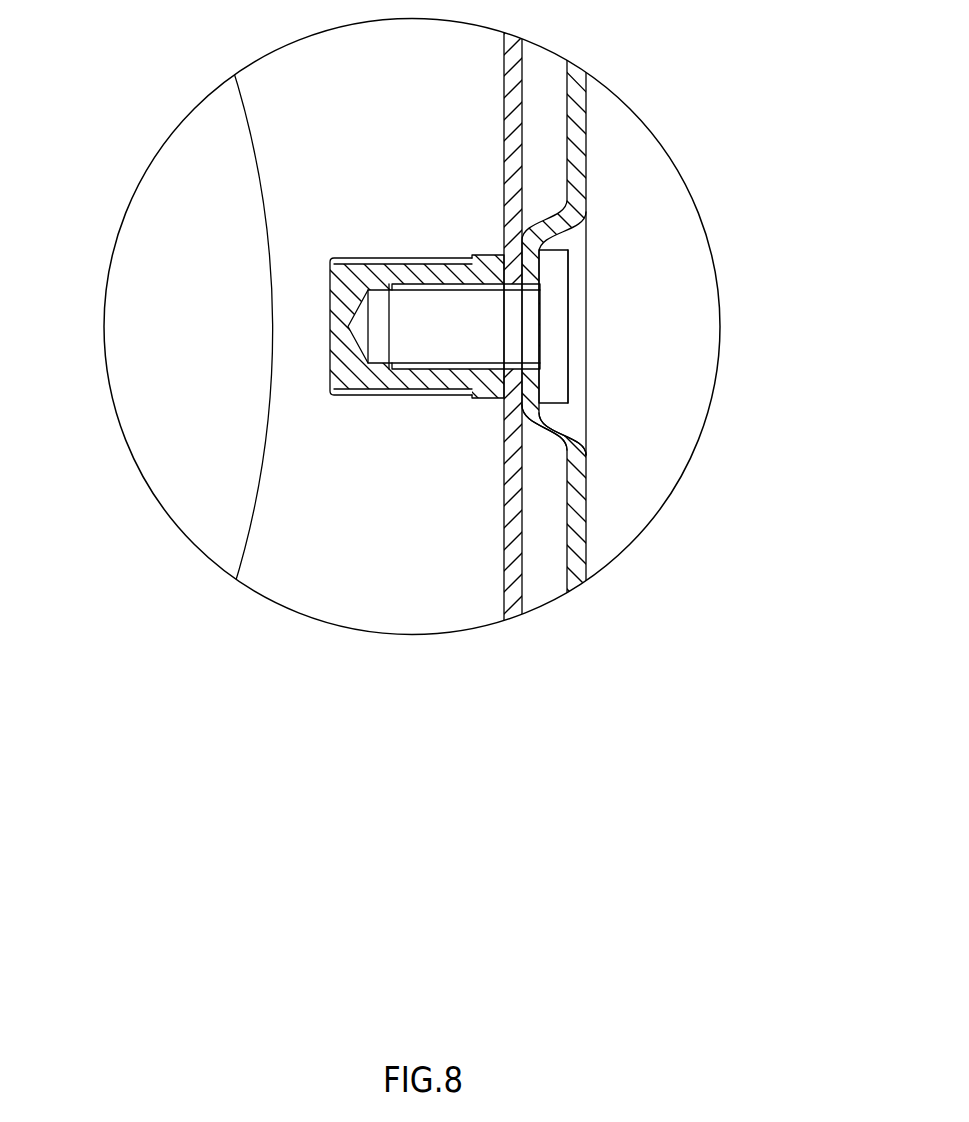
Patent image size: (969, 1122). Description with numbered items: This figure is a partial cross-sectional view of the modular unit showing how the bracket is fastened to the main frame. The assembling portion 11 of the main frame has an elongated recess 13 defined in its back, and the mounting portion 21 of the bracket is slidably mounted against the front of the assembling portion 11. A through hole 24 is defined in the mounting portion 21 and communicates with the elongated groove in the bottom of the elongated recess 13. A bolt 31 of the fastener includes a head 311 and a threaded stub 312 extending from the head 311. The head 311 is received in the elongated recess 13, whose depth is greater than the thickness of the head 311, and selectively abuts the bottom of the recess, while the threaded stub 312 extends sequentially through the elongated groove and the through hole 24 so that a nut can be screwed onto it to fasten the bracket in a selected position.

The assembling portion 11 is at (587, 150).
The elongated recess 13 is at (560, 415).
The mounting portion 21 is at (522, 568).
The through hole 24 is at (497, 255).
The bolt 31 is at (387, 257).
The head 311 is at (553, 368).
The threaded stub 312 is at (572, 338).